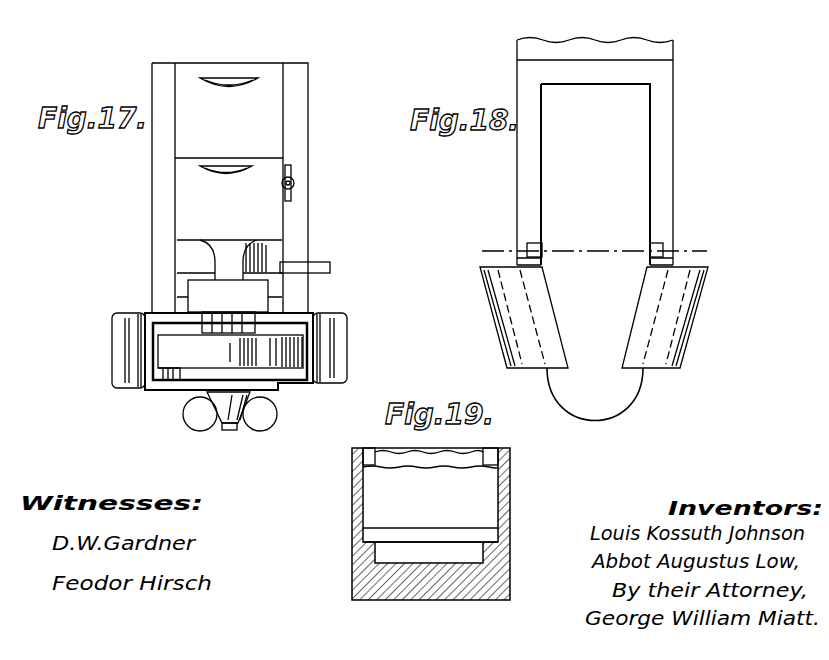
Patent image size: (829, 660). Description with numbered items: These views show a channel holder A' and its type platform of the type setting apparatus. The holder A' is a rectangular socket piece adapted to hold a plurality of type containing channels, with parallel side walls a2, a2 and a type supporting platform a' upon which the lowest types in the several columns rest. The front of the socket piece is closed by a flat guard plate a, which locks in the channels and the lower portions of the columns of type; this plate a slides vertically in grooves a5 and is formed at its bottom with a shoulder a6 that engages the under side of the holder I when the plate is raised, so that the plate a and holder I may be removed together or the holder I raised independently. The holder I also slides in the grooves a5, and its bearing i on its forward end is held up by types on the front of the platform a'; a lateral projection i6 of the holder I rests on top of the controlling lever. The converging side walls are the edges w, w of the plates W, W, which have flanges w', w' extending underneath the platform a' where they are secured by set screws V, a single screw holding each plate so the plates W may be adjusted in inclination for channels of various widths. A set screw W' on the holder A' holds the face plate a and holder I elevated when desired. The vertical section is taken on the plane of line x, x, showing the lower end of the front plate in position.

In FIG. 17, the channel holder A' is at (243, 188).
In FIG. 18, the channel holder A' is at (610, 152).
In FIG. 19, the channel holder A' is at (417, 524).
In FIG. 17, the set screw W' is at (314, 183).
In FIG. 17, the holder I is at (229, 260).
In FIG. 17, the lateral projection i6 is at (307, 256).
In FIG. 17, the bearing i is at (229, 306).
In FIG. 17, the plate W is at (228, 350).
In FIG. 17, the flat guard a is at (229, 351).
In FIG. 19, the flat guard a is at (430, 490).
In FIG. 17, the flange w' is at (210, 400).
In FIG. 17, the set screw V is at (230, 411).
In FIG. 18, the parallel side wall a2 is at (595, 174).
In FIG. 18, the groove a5 is at (528, 244).
In FIG. 19, the groove a5 is at (368, 455).
In FIG. 18, the section line x is at (594, 249).
In FIG. 18, the edge w is at (594, 317).
In FIG. 18, the type supporting platform a' is at (595, 392).
In FIG. 19, the shoulder a6 is at (430, 534).